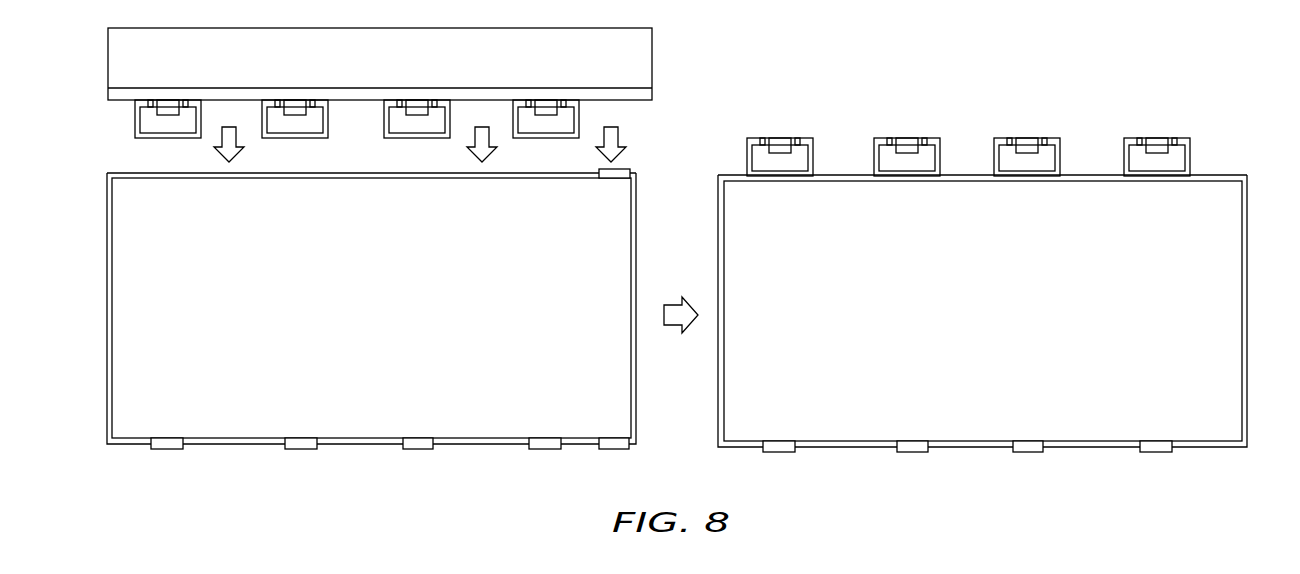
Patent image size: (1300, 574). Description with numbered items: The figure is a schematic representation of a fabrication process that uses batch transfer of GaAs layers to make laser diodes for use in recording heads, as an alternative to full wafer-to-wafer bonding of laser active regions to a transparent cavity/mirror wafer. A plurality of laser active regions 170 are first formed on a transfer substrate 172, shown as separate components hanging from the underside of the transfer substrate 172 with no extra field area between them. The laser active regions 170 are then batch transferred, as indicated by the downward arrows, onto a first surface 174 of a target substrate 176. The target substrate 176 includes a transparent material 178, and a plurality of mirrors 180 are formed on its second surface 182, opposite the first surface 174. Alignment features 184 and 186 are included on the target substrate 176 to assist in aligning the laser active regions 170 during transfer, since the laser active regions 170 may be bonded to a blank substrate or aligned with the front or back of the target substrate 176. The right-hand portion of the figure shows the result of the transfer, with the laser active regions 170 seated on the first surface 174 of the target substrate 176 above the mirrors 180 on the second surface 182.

The laser active regions 170 is at (421, 128).
The transfer substrate 172 is at (632, 62).
The first surface 174 is at (138, 172).
The target substrate 176 is at (130, 243).
The transparent material 178 is at (133, 378).
The mirrors 180 is at (417, 450).
The second surface 182 is at (248, 447).
The alignment feature 184 is at (615, 168).
The alignment feature 186 is at (613, 450).